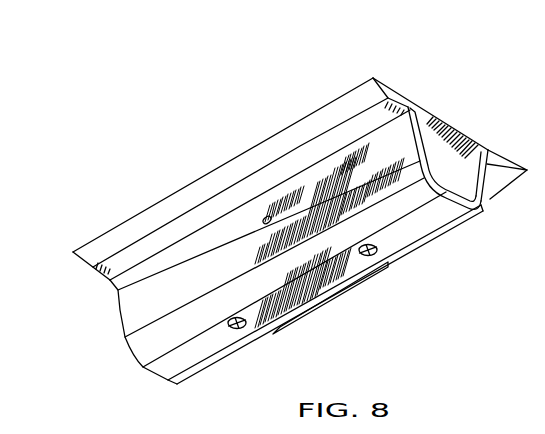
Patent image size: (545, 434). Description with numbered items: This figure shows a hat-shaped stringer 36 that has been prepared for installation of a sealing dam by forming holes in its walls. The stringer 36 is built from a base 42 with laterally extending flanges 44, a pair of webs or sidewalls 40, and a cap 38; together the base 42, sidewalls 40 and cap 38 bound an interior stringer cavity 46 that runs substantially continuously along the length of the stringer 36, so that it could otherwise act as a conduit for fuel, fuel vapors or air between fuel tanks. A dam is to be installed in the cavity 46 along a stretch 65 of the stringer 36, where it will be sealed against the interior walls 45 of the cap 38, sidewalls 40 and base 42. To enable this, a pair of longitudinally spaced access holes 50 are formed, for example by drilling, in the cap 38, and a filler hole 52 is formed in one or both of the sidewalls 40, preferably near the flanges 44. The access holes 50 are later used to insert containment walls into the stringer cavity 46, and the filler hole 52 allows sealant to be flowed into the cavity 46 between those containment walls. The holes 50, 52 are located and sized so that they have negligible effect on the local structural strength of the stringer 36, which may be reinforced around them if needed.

The stringer 36 is at (168, 165).
The cap 38 is at (153, 366).
The sidewalls 40 is at (126, 312).
The base 42 is at (472, 168).
The flanges 44 is at (288, 138).
The interior walls 45 is at (479, 146).
The stringer cavity 46 is at (438, 113).
The access holes 50 is at (240, 330).
The filler hole 52 is at (264, 224).
The stretch 65 is at (338, 300).